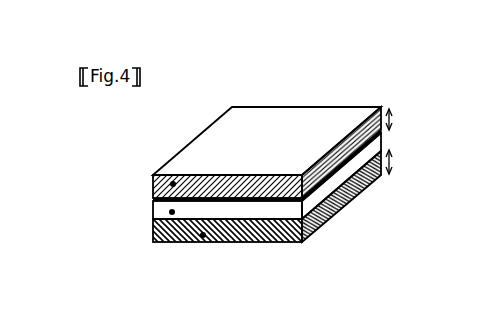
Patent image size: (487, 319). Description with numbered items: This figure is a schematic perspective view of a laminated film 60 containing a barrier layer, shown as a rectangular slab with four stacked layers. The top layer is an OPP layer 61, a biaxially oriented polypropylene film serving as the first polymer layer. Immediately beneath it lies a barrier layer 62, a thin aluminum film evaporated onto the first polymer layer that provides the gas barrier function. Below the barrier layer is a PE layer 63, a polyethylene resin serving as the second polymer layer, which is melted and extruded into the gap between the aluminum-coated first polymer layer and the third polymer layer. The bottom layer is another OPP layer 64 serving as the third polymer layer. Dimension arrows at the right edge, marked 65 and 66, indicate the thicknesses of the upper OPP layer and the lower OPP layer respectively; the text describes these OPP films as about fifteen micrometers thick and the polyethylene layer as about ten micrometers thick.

The laminated film 60 is at (219, 191).
The OPP layer 61 is at (158, 176).
The barrier layer 62 is at (150, 199).
The PE layer 63 is at (172, 212).
The OPP layer 64 is at (203, 235).
The thickness of first layer 65 is at (391, 119).
The thickness of fourth layer 66 is at (392, 160).